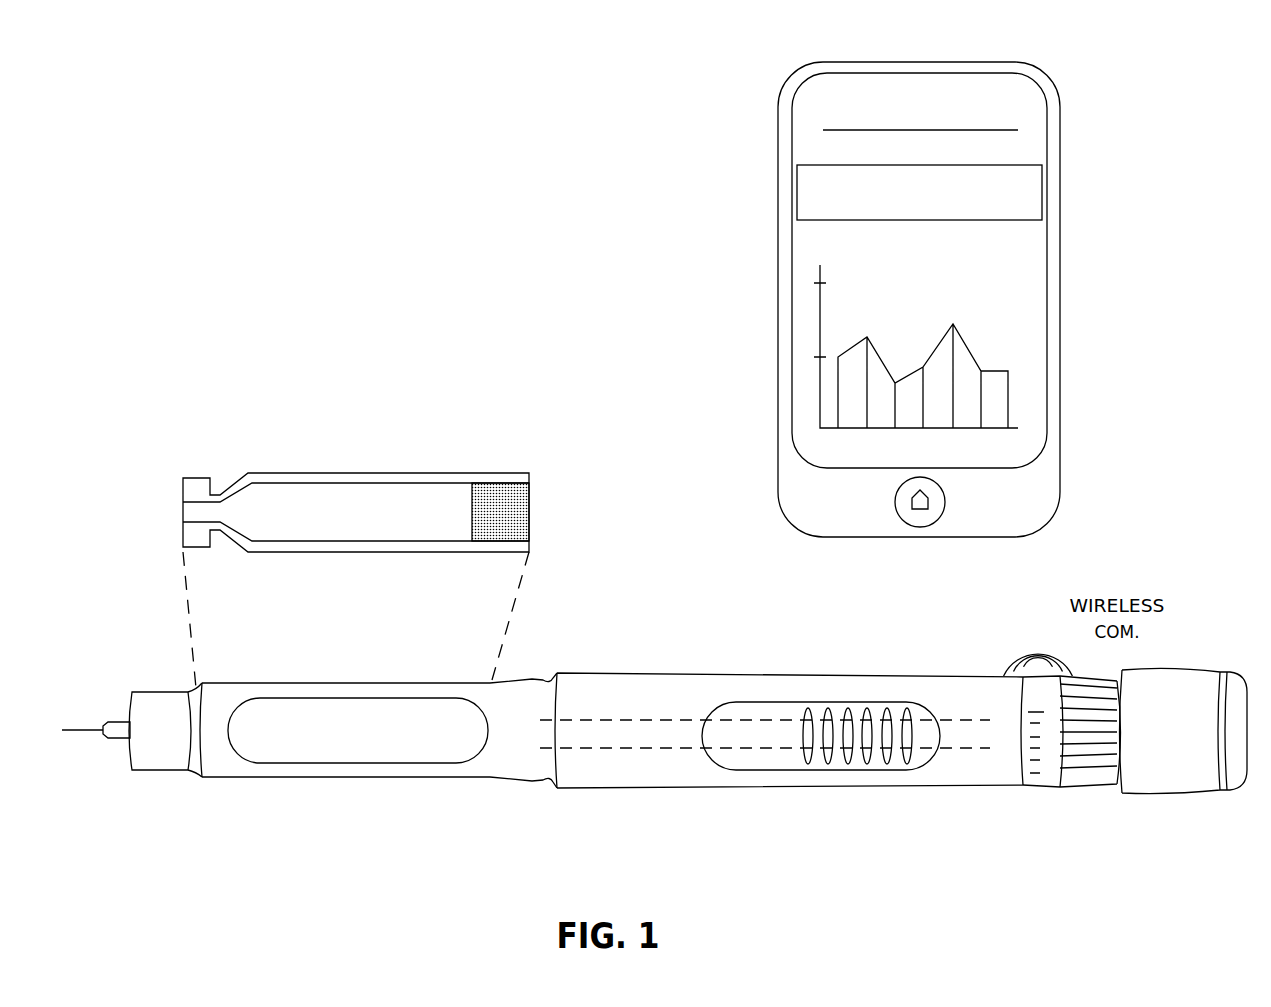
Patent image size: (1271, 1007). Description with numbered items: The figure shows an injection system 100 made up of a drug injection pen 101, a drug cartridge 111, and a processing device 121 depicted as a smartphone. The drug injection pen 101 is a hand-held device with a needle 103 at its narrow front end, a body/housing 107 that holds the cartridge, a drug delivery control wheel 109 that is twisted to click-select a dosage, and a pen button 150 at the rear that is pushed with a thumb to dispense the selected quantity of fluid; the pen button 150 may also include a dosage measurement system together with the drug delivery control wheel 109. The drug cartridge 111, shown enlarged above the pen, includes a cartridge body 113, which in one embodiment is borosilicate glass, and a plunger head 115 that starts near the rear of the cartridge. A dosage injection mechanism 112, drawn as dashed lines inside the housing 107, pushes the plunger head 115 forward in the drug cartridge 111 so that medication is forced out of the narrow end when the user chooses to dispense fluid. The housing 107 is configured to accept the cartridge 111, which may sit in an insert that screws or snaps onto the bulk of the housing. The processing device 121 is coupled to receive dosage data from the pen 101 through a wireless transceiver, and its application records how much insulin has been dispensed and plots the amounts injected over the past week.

The injection system 100 is at (326, 48).
The drug injection pen 101 is at (623, 668).
The needle 103 is at (158, 700).
The body/housing 107 is at (663, 771).
The drug delivery control wheel 109 is at (1080, 772).
The drug cartridge 111 is at (389, 548).
The dosage injection mechanism 112 is at (665, 722).
The cartridge body 113 is at (331, 478).
The plunger head 115 is at (518, 527).
The processing device 121 is at (902, 48).
The pen button 150 is at (1180, 774).